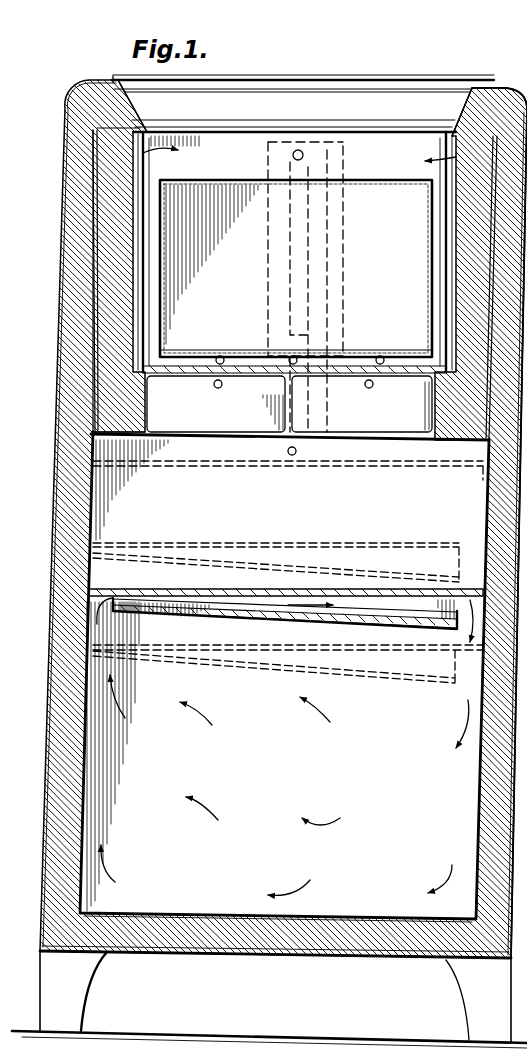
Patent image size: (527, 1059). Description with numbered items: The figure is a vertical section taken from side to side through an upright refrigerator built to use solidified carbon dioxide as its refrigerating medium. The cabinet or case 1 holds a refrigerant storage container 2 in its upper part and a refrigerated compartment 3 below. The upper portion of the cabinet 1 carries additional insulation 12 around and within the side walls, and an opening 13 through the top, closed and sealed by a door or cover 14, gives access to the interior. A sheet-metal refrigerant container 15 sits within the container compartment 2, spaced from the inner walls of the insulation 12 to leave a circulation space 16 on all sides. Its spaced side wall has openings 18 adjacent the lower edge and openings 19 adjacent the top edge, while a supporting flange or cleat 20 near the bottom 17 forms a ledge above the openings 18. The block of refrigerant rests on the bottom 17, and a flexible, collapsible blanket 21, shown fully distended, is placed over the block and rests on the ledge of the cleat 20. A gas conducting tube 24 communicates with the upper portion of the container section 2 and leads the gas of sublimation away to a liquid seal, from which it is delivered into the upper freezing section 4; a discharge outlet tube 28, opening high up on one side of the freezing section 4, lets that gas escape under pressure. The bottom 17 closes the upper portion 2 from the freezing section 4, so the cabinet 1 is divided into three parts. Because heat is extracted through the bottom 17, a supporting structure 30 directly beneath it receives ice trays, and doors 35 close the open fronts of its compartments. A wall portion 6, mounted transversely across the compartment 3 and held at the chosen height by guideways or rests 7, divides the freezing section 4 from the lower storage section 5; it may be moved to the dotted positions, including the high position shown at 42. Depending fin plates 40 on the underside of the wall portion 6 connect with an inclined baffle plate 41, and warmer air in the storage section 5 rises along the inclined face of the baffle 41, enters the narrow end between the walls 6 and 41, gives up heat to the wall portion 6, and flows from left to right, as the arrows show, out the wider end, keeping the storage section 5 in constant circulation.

The cabinet or case 1 is at (66, 497).
The refrigerant storage container 2 is at (396, 150).
The refrigerated compartment 3 is at (212, 900).
The upper freezing section 4 is at (222, 490).
The lower storage section 5 is at (269, 756).
The wall portion 6 is at (162, 590).
The guideways or rests 7 is at (447, 690).
The insulation 12 is at (123, 199).
The opening 13 is at (464, 108).
The door or cover 14 is at (291, 97).
The refrigerant container 15 is at (444, 237).
The circulation space 16 is at (459, 285).
The bottom 17 is at (421, 360).
The openings 18 is at (236, 355).
The openings 19 is at (450, 167).
The supporting flange or cleat 20 is at (165, 356).
The flexible and collapsible blanket 21 is at (356, 183).
The gas conducting tube 24 is at (348, 145).
The discharge outlet tube 28 is at (298, 461).
The supporting structure 30 is at (437, 440).
The doors 35 is at (330, 473).
The fin plates 40 is at (279, 612).
The inclined baffle plate 41 is at (227, 613).
The raised wall position 42 is at (399, 468).